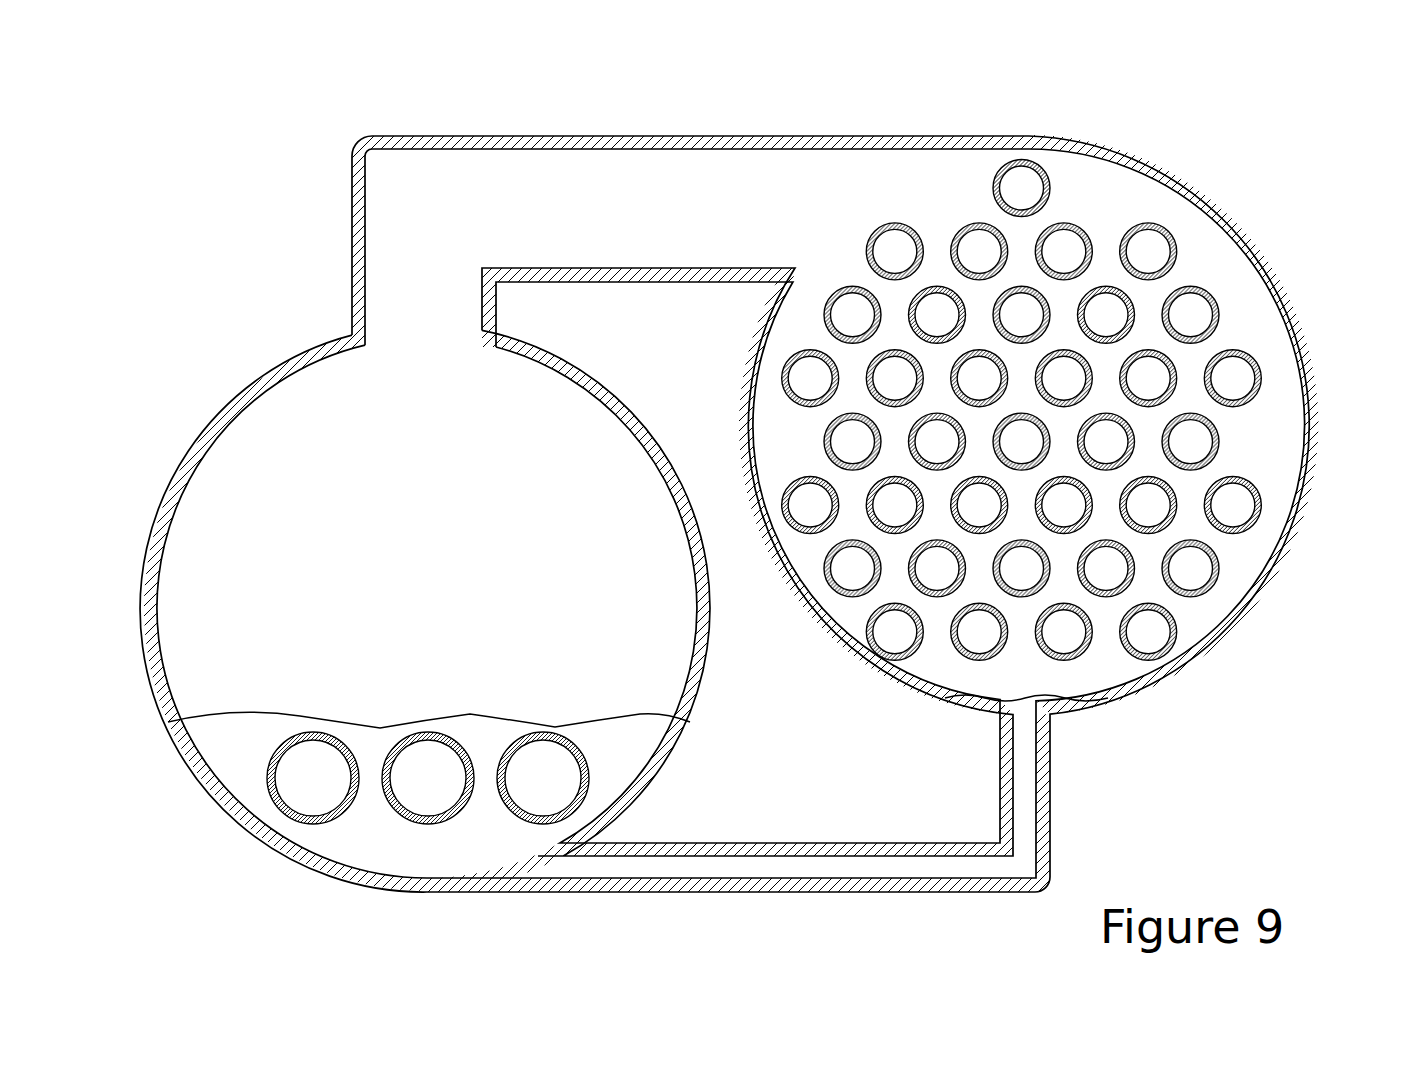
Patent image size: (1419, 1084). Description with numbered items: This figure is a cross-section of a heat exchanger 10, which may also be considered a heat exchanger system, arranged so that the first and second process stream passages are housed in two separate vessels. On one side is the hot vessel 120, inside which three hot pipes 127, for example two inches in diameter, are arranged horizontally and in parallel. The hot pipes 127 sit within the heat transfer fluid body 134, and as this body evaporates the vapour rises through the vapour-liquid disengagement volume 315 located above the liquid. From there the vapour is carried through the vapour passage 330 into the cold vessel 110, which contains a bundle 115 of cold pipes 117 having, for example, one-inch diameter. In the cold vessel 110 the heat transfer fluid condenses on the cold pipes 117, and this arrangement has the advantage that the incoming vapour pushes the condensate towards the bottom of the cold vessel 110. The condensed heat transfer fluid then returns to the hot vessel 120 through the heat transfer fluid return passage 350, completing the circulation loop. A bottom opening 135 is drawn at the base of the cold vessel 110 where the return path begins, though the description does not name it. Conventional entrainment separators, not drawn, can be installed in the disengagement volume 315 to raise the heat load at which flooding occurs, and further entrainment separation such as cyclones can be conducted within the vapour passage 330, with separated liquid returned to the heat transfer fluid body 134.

The heat exchanger 10 is at (793, 117).
The cold vessel 110 is at (1197, 187).
The bundle 115 is at (1207, 258).
The cold pipes 117 is at (973, 245).
The hot vessel 120 is at (195, 428).
The hot pipes 127 is at (313, 770).
The heat transfer fluid body 134 is at (623, 757).
The bottom outlet passage 135 is at (1072, 708).
The vapour-liquid disengagement volume 315 is at (404, 563).
The vapour passage 330 is at (591, 203).
The heat transfer fluid return passage 350 is at (885, 862).